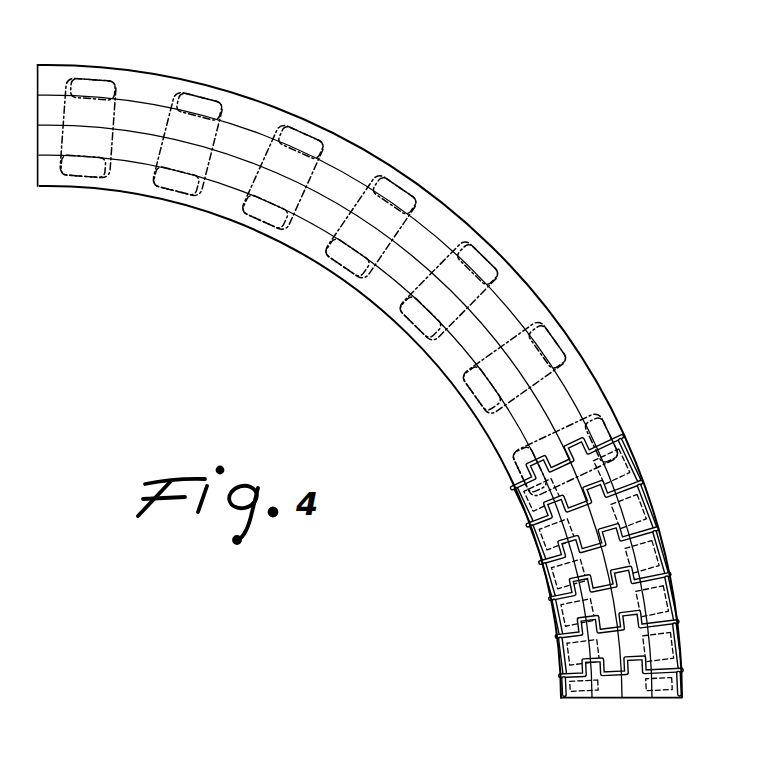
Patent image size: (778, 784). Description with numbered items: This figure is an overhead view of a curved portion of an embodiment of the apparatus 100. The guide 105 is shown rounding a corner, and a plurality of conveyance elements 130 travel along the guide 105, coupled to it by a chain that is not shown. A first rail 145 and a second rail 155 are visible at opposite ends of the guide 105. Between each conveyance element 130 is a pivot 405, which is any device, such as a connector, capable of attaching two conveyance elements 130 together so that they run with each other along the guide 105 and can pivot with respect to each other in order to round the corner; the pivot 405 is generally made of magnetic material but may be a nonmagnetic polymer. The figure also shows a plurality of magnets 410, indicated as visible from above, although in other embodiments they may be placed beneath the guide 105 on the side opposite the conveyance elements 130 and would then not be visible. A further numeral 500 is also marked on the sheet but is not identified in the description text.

The apparatus 100 is at (619, 169).
The guide 105 is at (134, 230).
The conveyance elements 130 is at (532, 507).
The first rail 145 is at (378, 300).
The second rail 155 is at (530, 293).
The pivot 405 is at (624, 680).
The magnets 410 is at (91, 78).
The assembly 500 is at (86, 761).